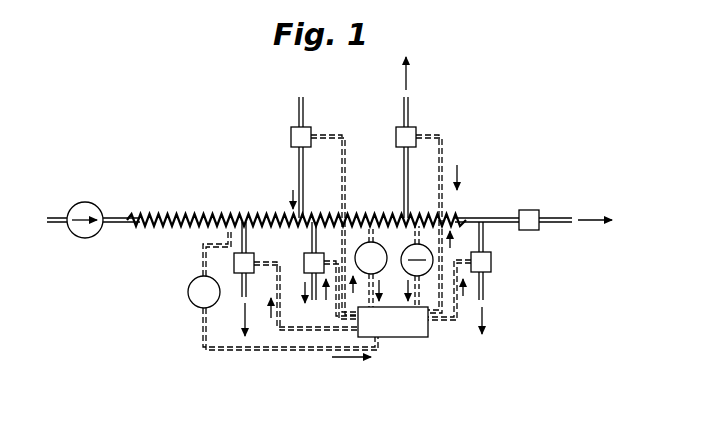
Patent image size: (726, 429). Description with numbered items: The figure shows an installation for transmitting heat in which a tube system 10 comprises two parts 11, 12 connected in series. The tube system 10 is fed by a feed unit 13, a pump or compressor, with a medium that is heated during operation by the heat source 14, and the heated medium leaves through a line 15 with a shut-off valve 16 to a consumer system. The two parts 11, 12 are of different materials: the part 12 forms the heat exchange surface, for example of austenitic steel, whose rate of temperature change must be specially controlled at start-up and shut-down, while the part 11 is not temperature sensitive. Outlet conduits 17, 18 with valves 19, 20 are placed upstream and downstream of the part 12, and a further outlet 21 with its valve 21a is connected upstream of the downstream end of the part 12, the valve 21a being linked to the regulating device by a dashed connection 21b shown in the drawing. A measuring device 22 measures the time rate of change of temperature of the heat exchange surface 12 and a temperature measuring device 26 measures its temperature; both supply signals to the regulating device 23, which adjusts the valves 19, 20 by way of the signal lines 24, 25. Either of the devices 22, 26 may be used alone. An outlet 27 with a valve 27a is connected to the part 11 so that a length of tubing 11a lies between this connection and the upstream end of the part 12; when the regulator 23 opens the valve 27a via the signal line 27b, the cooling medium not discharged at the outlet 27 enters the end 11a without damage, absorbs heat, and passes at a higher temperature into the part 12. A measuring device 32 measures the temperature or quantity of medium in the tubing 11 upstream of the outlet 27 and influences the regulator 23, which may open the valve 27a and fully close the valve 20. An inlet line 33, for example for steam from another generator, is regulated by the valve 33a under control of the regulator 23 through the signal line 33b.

The tube system 10 is at (236, 204).
The first part of tube system 11 is at (208, 219).
The length of tubing 11a is at (310, 247).
The heat exchange surface 12 is at (401, 219).
The feed unit 13 is at (86, 201).
The heat source 14 is at (251, 186).
The line 15 is at (505, 216).
The shut-off valve 16 is at (532, 231).
The outlet conduit 17 is at (315, 247).
The outlet conduit 18 is at (486, 240).
The valve 19 is at (315, 240).
The valve 20 is at (491, 261).
The outlet 21 is at (404, 160).
The valve 21a is at (418, 133).
The control line 21b is at (443, 197).
The measuring device 22 is at (425, 278).
The regulating device 23 is at (420, 338).
The signal line 24 is at (455, 317).
The signal line 25 is at (347, 322).
The temperature measuring device 26 is at (363, 152).
The outlet 27 is at (242, 247).
The valve 27a is at (235, 265).
The signal line 27b is at (330, 332).
The measuring device 32 is at (189, 295).
The inlet line 33 is at (299, 176).
The valve 33a is at (289, 128).
The signal line 33b is at (331, 131).